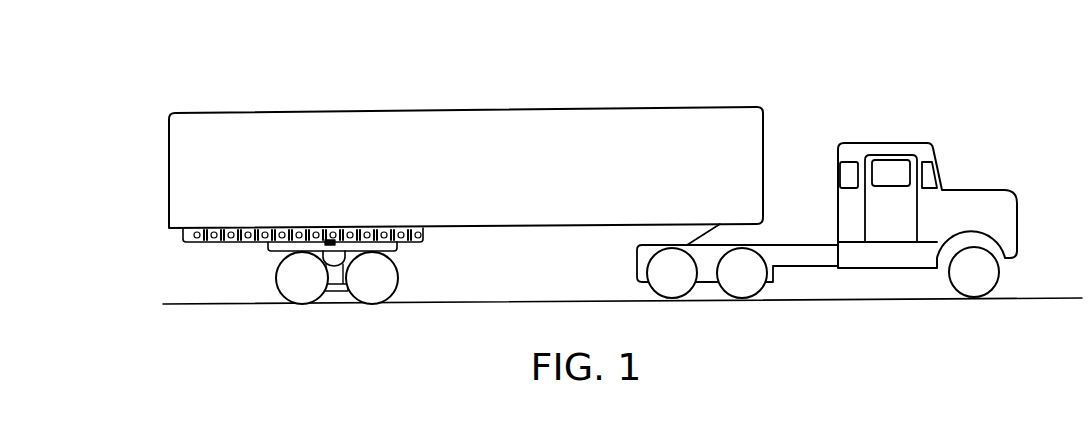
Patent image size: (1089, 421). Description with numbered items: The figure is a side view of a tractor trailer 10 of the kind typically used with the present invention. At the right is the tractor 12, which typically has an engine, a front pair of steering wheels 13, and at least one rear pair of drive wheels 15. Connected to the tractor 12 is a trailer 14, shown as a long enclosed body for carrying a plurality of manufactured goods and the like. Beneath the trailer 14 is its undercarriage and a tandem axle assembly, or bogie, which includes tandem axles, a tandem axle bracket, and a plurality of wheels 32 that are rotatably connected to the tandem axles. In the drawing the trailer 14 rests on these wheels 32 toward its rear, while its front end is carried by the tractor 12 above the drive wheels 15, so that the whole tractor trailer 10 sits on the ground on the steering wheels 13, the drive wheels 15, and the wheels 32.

The tractor trailer 10 is at (862, 85).
The tractor 12 is at (980, 188).
The front pair of steering wheels 13 is at (970, 285).
The trailer 14 is at (413, 110).
The rear pair of drive wheels 15 is at (672, 292).
The wheels 32 is at (303, 292).